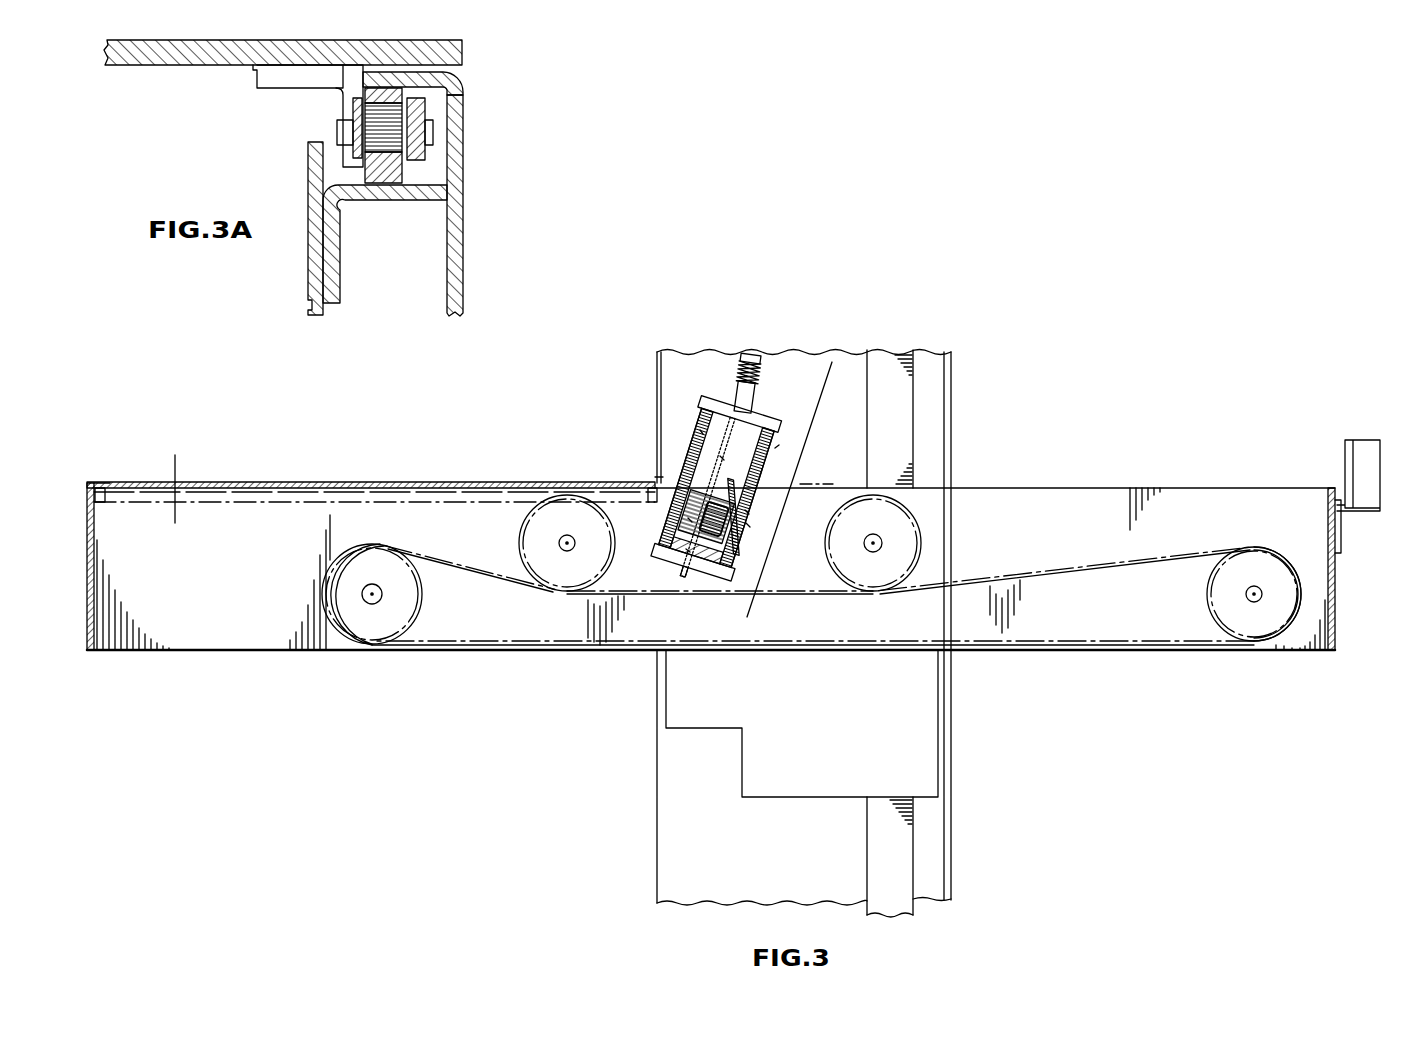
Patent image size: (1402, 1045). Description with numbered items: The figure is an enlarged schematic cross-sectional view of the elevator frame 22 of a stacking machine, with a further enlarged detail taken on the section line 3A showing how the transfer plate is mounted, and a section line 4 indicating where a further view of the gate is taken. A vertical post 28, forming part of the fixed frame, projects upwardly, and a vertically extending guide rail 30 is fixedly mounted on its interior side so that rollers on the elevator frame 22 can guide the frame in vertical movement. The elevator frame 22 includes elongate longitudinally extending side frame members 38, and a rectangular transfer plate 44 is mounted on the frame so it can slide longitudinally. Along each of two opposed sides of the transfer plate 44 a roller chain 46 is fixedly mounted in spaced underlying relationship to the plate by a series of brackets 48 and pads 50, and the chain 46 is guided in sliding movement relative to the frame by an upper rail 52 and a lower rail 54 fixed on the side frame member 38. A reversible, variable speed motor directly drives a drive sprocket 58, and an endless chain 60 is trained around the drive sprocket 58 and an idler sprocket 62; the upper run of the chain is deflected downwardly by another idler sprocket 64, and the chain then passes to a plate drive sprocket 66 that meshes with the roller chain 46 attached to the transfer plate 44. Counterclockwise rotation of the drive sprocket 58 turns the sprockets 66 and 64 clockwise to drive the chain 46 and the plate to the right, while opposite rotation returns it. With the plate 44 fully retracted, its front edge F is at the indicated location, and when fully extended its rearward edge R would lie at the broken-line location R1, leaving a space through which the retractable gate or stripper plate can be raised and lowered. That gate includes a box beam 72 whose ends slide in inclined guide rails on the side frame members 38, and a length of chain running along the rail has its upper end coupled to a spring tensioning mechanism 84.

In FIG. 3A, the elevator frame 22 is at (484, 172).
In FIG. 3, the elevator frame 22 is at (186, 636).
In FIG. 3, the vertical post 28 is at (953, 716).
In FIG. 3, the guide rail 30 is at (875, 838).
In FIG. 3A, the side frame member 38 is at (463, 213).
In FIG. 3, the side frame member 38 is at (324, 651).
In FIG. 3A, the transfer plate 44 is at (186, 65).
In FIG. 3, the transfer plate 44 is at (437, 483).
In FIG. 3A, the roller chain 46 is at (432, 145).
In FIG. 3, the roller chain 46 is at (383, 500).
In FIG. 3A, the bracket 48 is at (290, 92).
In FIG. 3A, the pad 50 is at (268, 75).
In FIG. 3A, the upper rail 52 is at (440, 95).
In FIG. 3A, the lower rail 54 is at (386, 183).
In FIG. 3, the drive sprocket 58 is at (405, 597).
In FIG. 3, the endless chain 60 is at (565, 643).
In FIG. 3, the idler sprocket 62 is at (1281, 562).
In FIG. 3, the idler sprocket 64 is at (913, 548).
In FIG. 3, the plate drive sprocket 66 is at (530, 537).
In FIG. 3, the box beam 72 is at (648, 492).
In FIG. 3, the spring tensioning mechanism 84 is at (726, 372).
In FIG. 3, the section line 4- 4 is at (813, 357).
In FIG. 3, the section line 3A- 3A is at (152, 467).
In FIG. 3, the rearward edge R is at (90, 483).
In FIG. 3, the extended rearward edge location R1 is at (790, 488).
In FIG. 3, the front edge F is at (665, 478).